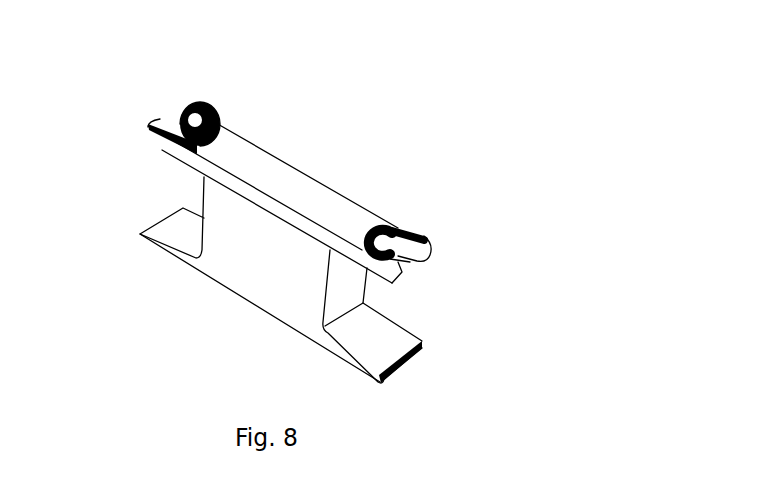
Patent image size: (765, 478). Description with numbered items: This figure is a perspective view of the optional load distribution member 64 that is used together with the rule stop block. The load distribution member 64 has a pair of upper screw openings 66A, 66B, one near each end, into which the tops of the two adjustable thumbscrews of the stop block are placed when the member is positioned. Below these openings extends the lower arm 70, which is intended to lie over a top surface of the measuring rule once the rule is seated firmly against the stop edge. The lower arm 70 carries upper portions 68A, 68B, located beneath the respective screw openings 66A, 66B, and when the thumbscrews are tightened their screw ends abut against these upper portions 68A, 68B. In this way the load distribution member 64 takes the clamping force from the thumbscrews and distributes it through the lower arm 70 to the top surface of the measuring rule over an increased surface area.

The load distribution member 64 is at (86, 209).
The upper screw opening 66A is at (206, 110).
The upper screw opening 66B is at (396, 228).
The upper portion of lower arm 68A is at (175, 233).
The upper portion of lower arm 68B is at (382, 345).
The lower arm 70 is at (242, 298).